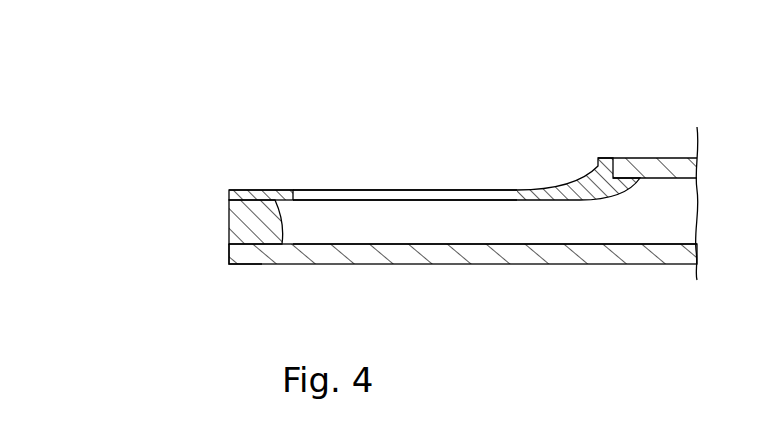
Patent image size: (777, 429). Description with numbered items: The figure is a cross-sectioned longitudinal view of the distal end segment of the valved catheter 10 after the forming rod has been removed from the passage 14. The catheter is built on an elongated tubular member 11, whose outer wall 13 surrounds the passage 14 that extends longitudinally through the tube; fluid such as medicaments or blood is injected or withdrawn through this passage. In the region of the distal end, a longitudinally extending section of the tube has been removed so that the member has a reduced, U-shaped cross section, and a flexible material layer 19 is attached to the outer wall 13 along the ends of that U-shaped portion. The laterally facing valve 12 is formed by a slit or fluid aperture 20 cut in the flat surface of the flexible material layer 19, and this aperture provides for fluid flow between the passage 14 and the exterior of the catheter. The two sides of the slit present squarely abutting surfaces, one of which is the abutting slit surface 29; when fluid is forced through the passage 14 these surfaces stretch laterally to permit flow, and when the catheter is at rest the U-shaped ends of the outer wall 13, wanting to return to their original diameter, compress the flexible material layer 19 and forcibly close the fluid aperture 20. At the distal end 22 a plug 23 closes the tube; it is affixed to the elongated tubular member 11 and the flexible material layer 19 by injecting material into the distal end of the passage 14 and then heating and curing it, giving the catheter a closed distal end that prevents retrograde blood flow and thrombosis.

The valved catheter 10 is at (162, 142).
The elongated tubular member 11 is at (640, 158).
The laterally facing valve 12 is at (443, 190).
The outer wall 13 is at (630, 253).
The passage 14 is at (495, 230).
The flexible material layer 19 is at (262, 191).
The fluid aperture 20 is at (515, 190).
The closed distal end 22 is at (228, 247).
The plug 23 is at (228, 217).
The abutting slit surface 29 is at (392, 195).